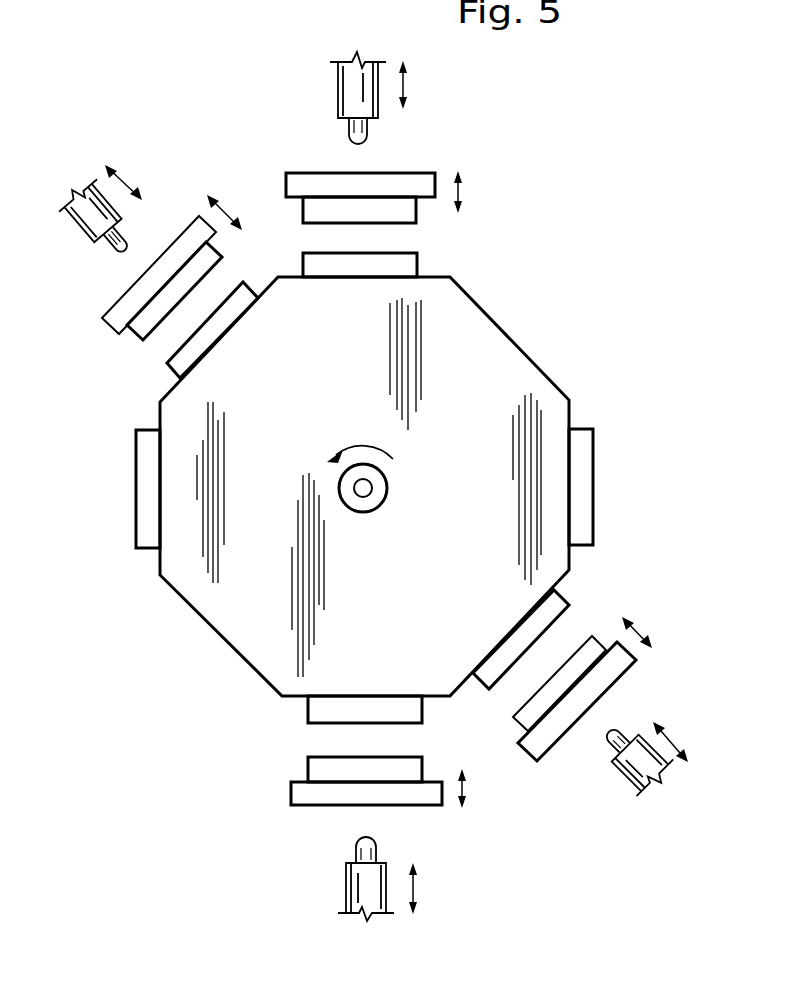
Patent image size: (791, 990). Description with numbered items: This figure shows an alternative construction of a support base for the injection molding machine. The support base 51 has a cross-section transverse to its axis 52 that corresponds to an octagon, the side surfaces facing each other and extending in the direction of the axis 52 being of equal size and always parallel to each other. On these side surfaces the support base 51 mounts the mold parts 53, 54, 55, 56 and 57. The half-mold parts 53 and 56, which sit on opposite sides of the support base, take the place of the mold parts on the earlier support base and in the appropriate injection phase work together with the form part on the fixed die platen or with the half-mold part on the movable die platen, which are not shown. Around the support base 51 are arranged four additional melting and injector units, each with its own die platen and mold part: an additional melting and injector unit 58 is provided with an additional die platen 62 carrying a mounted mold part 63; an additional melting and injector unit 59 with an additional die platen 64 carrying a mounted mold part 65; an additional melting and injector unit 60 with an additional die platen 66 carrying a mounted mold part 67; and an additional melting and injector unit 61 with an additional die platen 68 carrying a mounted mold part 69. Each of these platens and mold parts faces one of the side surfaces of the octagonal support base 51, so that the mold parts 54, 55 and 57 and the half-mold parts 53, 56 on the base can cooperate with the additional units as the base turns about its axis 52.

The support base 51 is at (518, 380).
The axis 52 is at (372, 477).
The half-mold part 53 is at (578, 478).
The mold part 54 is at (385, 263).
The mold part 55 is at (177, 368).
The half-mold part 56 is at (145, 485).
The mold part 57 is at (323, 712).
The additional melting and injector unit 58 is at (360, 898).
The additional melting and injector unit 59 is at (640, 788).
The additional melting and injector unit 60 is at (358, 97).
The additional melting and injector unit 61 is at (95, 210).
The additional die platen 62 is at (428, 795).
The mounted mold part 63 is at (325, 765).
The additional die platen 64 is at (558, 725).
The mounted mold part 65 is at (537, 712).
The additional die platen 66 is at (417, 183).
The mounted mold part 67 is at (330, 212).
The additional die platen 68 is at (133, 300).
The mounted mold part 69 is at (140, 327).